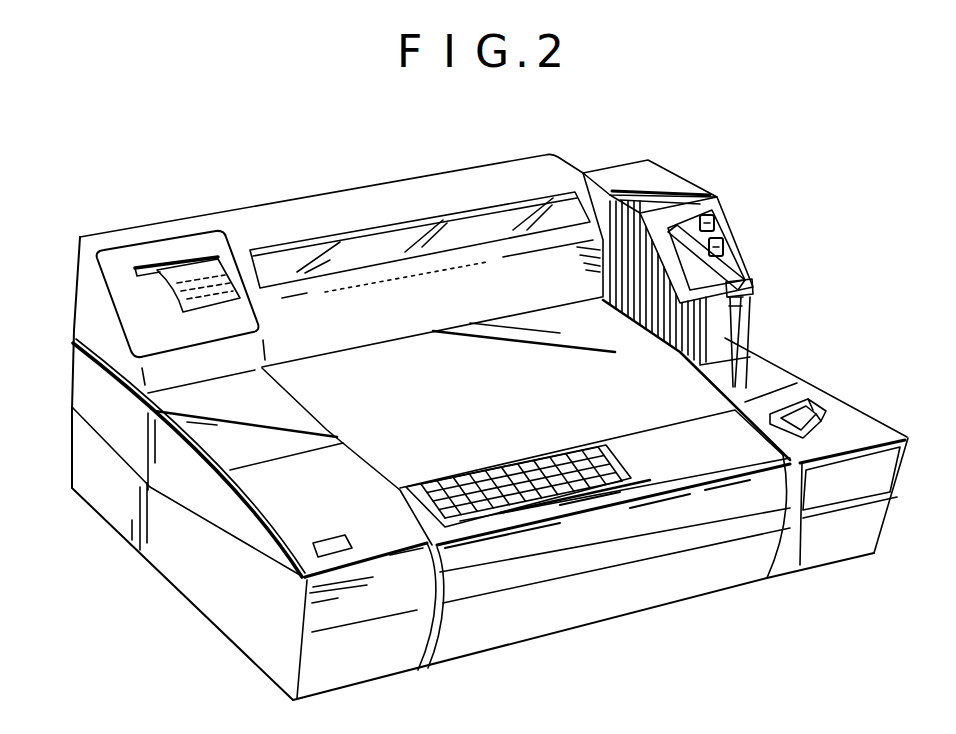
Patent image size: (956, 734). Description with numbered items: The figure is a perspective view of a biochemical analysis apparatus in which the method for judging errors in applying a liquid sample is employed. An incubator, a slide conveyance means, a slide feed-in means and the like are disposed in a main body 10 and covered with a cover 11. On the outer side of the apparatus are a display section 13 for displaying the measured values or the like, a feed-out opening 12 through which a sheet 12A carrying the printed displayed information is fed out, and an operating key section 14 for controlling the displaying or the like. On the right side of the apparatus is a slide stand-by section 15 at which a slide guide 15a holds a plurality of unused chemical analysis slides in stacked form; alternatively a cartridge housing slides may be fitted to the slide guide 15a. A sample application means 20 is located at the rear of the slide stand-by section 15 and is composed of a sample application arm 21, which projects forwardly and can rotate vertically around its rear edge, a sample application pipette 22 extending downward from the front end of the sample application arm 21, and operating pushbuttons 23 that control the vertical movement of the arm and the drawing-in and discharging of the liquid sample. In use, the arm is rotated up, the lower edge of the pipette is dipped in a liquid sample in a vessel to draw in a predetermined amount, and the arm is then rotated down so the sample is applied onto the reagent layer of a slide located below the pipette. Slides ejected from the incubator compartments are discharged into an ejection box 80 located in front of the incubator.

The main body 10 is at (223, 612).
The cover 11 is at (500, 411).
The feed-out opening 12 is at (182, 258).
The sheet 12A is at (173, 287).
The display section 13 is at (397, 232).
The operating key section 14 is at (562, 452).
The slide stand-by section 15 is at (853, 397).
The slide guide 15a is at (830, 414).
The sample application means 20 is at (762, 256).
The sample application arm 21 is at (748, 283).
The sample application pipette 22 is at (745, 324).
The operating pushbuttons 23 is at (723, 243).
The ejection box 80 is at (647, 585).